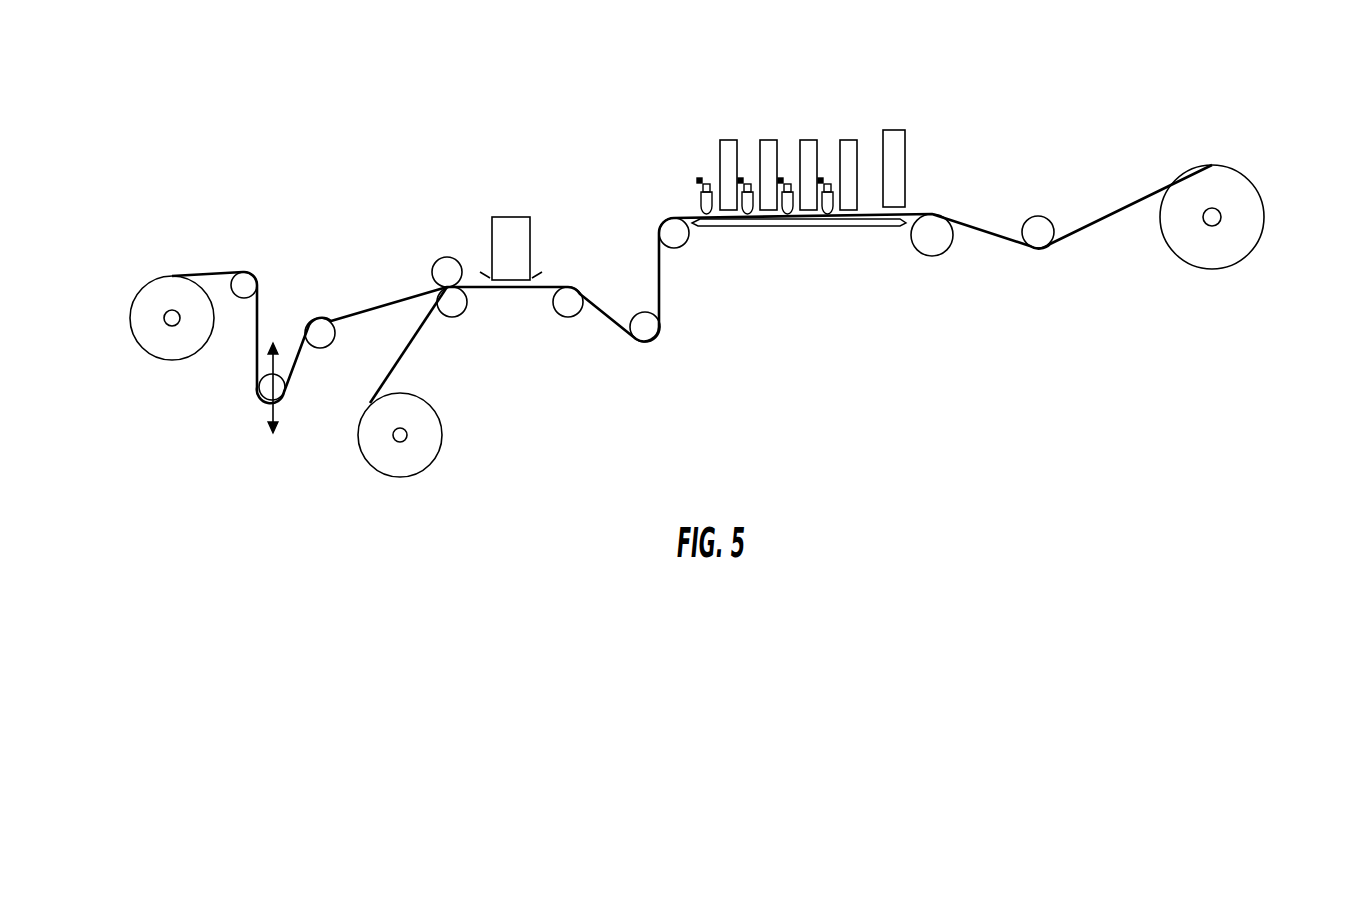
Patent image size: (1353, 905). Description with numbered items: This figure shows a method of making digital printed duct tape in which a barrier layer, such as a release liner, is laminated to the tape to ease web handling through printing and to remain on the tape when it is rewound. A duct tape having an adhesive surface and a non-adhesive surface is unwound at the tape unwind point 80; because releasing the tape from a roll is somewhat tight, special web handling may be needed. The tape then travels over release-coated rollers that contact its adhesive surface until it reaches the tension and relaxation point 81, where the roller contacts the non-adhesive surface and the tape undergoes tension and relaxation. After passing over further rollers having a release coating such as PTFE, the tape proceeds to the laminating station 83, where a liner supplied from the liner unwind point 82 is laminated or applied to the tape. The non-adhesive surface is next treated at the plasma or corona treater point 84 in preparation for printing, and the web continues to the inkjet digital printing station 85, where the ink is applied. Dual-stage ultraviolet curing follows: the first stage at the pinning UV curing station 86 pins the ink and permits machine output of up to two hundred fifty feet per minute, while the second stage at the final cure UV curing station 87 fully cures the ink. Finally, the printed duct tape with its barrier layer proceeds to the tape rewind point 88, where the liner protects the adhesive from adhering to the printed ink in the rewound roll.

The tape unwind point 80 is at (172, 276).
The tension and relaxation point 81 is at (260, 388).
The liner unwind point 82 is at (428, 460).
The laminating station 83 is at (442, 273).
The plasma or corona treater point 84 is at (512, 225).
The inkjet digital printing station 85 is at (821, 178).
The UV curing Station 1 (pinning) 86 is at (848, 140).
The UV curing Station 2 (final cure) 87 is at (894, 130).
The tape rewind point 88 is at (1228, 167).